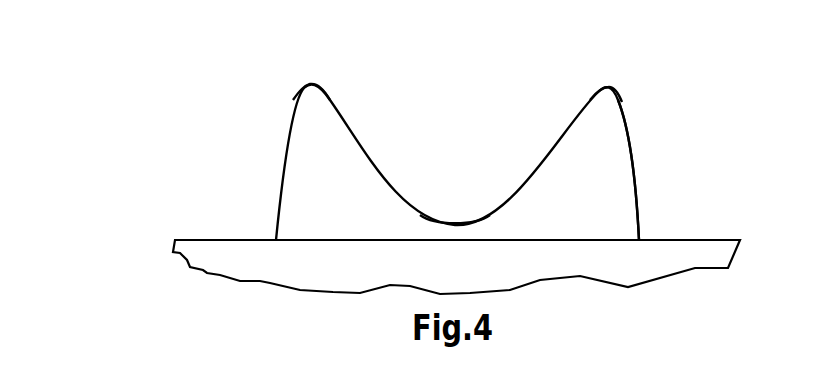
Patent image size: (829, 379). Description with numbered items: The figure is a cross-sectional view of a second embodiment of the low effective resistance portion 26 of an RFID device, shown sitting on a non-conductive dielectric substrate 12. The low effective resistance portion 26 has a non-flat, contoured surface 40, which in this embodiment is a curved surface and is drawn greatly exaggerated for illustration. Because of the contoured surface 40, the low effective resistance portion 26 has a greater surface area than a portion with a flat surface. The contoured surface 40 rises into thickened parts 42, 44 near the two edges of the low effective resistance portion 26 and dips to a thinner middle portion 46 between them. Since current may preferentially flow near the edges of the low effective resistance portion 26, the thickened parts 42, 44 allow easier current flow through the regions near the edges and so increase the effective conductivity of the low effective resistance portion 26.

The substrate 12 is at (207, 255).
The low effective resistance portion 26 is at (260, 100).
The contoured surface 40 is at (642, 138).
The thickened part 42 is at (328, 72).
The thickened part 44 is at (620, 75).
The thinner middle portion 46 is at (453, 214).